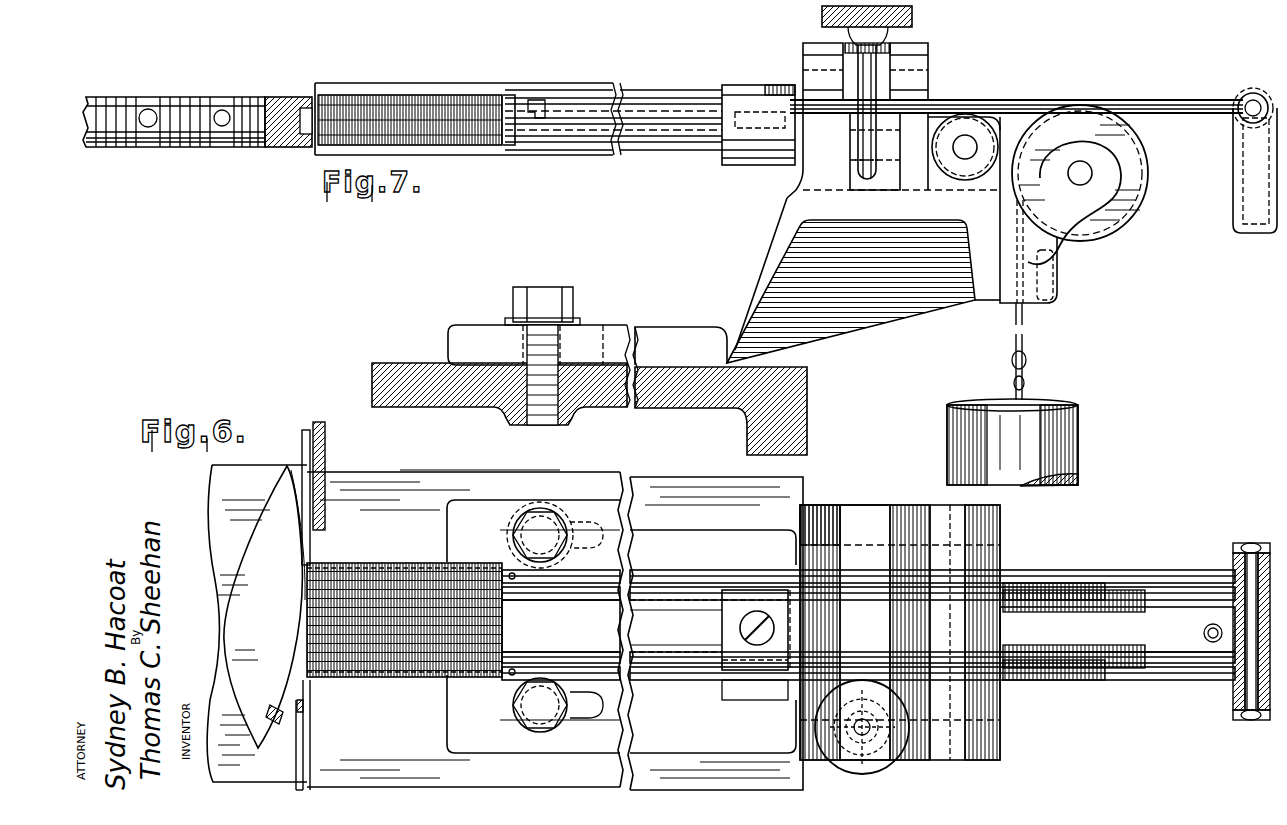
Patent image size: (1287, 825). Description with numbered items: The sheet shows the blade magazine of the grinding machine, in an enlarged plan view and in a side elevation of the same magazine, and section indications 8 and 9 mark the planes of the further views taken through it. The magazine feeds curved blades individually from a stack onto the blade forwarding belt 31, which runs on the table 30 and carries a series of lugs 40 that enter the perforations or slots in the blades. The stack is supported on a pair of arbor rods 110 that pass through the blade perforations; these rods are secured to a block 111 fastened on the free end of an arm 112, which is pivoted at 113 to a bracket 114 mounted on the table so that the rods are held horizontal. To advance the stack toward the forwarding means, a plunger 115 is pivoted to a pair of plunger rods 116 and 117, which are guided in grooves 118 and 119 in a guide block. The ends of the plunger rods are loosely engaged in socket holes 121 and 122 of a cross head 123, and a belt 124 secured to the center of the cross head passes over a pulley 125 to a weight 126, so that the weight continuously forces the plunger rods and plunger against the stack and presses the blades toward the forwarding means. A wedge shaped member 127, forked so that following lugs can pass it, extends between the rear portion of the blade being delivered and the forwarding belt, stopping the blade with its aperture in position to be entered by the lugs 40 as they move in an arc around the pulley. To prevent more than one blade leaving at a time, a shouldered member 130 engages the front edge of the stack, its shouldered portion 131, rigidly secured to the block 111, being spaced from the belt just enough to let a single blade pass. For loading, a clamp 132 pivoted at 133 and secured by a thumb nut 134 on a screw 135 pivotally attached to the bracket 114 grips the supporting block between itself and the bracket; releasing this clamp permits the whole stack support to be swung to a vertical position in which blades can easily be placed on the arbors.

In FIG. 6, the section line 8- 8 is at (488, 475).
In FIG. 6, the section arrows 9 is at (373, 506).
In FIG. 6, the table 30 is at (807, 480).
In FIG. 6, the blade forwarding belt 31 is at (303, 432).
In FIG. 6, the lugs 40 is at (322, 462).
In FIG. 7, the arbor rods 110 is at (662, 130).
In FIG. 7, the block 111 is at (742, 165).
In FIG. 7, the arm 112 is at (950, 100).
In FIG. 6, the arm 112 is at (722, 612).
In FIG. 7, the pivot 113 is at (975, 140).
In FIG. 7, the bracket 114 is at (744, 262).
In FIG. 6, the bracket 114 is at (1000, 530).
In FIG. 7, the plunger 115 is at (528, 143).
In FIG. 6, the plunger 115 is at (530, 632).
In FIG. 7, the plunger rod 116 is at (638, 100).
In FIG. 6, the plunger rod 116 is at (664, 683).
In FIG. 6, the plunger rod 117 is at (650, 569).
In FIG. 6, the groove 118 is at (735, 569).
In FIG. 6, the groove 119 is at (657, 595).
In FIG. 6, the socket hole 121 is at (1233, 577).
In FIG. 6, the socket hole 122 is at (1232, 690).
In FIG. 6, the cross head 123 is at (1233, 665).
In FIG. 7, the belt 124 is at (1026, 350).
In FIG. 7, the pulley 125 is at (1123, 228).
In FIG. 7, the weight 126 is at (1080, 432).
In FIG. 6, the wedge shaped member 127 is at (316, 740).
In FIG. 6, the shouldered member 130 is at (327, 548).
In FIG. 6, the shouldered portion 131 is at (327, 548).
In FIG. 6, the clamp 132 is at (893, 632).
In FIG. 6, the pivot 133 is at (830, 525).
In FIG. 7, the thumb nut 134 is at (822, 20).
In FIG. 7, the screw 135 is at (858, 80).